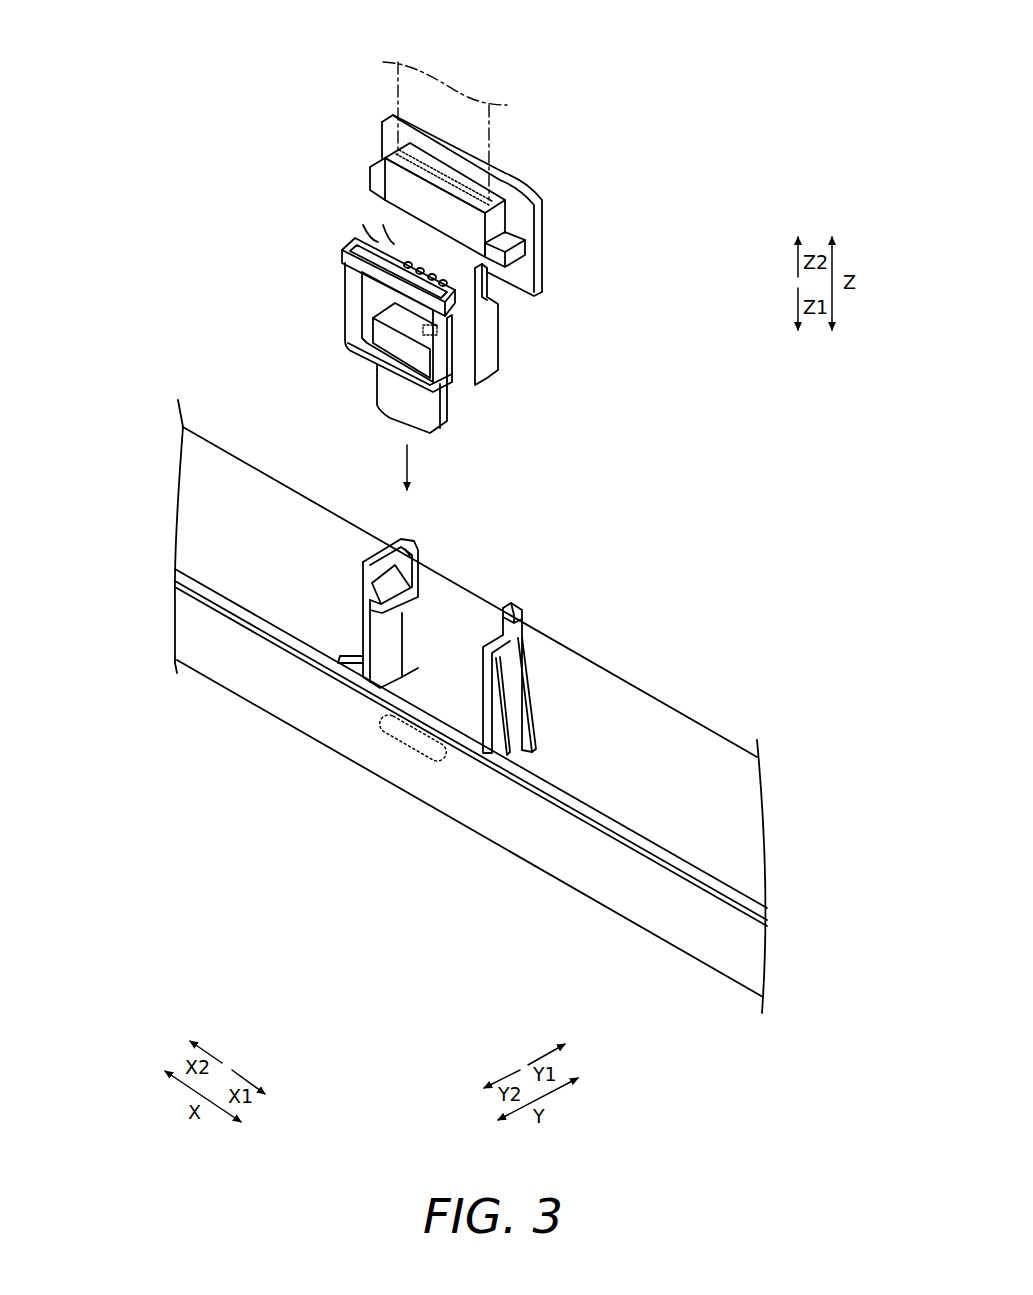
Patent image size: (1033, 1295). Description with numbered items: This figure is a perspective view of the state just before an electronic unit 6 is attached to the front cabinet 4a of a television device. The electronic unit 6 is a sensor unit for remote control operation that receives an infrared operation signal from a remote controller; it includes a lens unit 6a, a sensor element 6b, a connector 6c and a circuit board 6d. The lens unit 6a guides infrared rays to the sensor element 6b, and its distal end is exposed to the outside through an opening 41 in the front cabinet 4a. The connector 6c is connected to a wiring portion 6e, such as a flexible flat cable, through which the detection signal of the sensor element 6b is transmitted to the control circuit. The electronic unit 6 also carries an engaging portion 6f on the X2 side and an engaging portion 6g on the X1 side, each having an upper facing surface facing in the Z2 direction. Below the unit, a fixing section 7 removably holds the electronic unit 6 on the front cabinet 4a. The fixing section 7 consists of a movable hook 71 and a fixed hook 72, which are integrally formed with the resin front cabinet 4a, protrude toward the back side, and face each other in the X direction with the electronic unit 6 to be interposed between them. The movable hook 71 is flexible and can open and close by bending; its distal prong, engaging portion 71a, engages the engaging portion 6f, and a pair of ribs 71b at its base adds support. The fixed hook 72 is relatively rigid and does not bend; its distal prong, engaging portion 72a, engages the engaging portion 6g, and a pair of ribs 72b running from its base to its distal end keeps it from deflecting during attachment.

The front cabinet 4a is at (671, 690).
The opening 41 is at (397, 735).
The electronic unit 6 is at (541, 131).
The lens unit 6a is at (443, 421).
The sensor element 6b is at (437, 333).
The connector 6c is at (498, 220).
The circuit board 6d is at (540, 255).
The wiring portion 6e is at (490, 147).
The engaging portion 6f is at (380, 238).
The engaging portion 6g is at (493, 300).
The fixing section 7 is at (507, 552).
The movable hook 71 is at (401, 588).
The engaging portion 71a is at (403, 620).
The ribs 71b is at (342, 648).
The fixed hook 72 is at (543, 655).
The engaging portion 72a is at (479, 652).
The ribs 72b is at (542, 717).